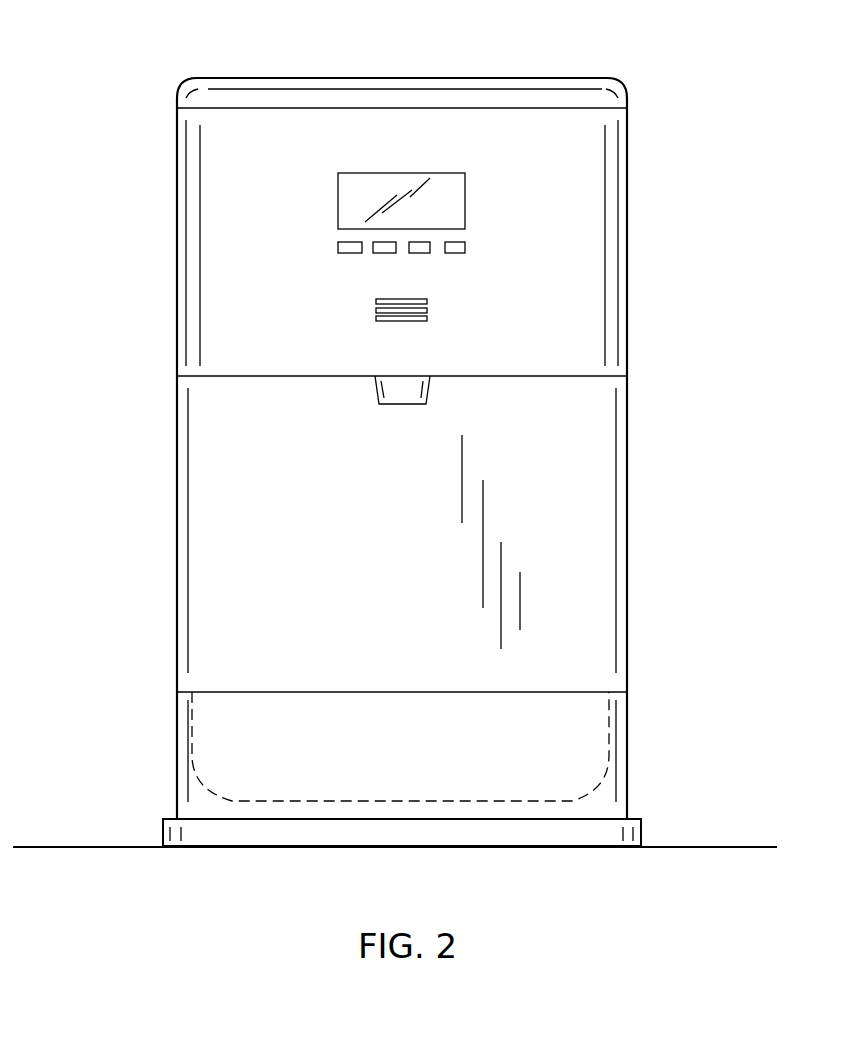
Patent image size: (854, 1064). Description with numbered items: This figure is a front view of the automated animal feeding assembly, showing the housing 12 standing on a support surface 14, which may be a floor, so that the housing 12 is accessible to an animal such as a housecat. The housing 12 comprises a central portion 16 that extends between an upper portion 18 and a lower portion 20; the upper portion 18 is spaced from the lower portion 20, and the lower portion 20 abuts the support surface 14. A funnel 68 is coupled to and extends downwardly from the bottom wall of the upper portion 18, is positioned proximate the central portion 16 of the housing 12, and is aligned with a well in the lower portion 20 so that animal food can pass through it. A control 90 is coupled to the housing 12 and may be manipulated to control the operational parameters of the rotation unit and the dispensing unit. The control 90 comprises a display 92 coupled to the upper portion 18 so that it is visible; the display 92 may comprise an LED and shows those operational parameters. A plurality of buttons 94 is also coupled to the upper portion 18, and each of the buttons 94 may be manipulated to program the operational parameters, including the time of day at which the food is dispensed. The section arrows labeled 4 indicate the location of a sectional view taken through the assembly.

The housing 12 is at (630, 228).
The support surface 14 is at (708, 846).
The central portion 16 is at (204, 520).
The upper portion 18 is at (204, 258).
The lower portion 20 is at (194, 793).
The funnel 68 is at (376, 389).
The control 90 is at (470, 181).
The display 92 is at (338, 197).
The buttons 94 is at (430, 253).
The section line 4 is at (425, 67).